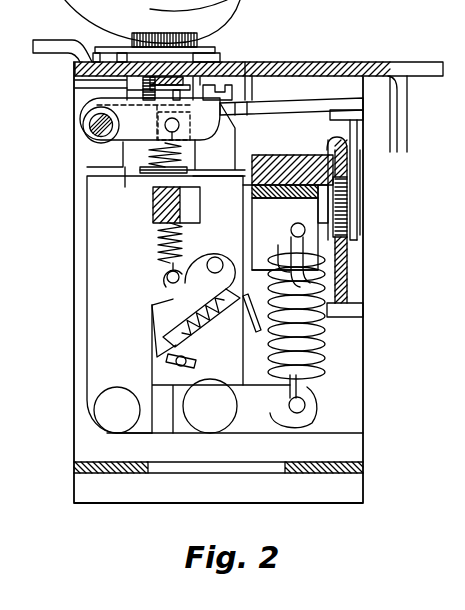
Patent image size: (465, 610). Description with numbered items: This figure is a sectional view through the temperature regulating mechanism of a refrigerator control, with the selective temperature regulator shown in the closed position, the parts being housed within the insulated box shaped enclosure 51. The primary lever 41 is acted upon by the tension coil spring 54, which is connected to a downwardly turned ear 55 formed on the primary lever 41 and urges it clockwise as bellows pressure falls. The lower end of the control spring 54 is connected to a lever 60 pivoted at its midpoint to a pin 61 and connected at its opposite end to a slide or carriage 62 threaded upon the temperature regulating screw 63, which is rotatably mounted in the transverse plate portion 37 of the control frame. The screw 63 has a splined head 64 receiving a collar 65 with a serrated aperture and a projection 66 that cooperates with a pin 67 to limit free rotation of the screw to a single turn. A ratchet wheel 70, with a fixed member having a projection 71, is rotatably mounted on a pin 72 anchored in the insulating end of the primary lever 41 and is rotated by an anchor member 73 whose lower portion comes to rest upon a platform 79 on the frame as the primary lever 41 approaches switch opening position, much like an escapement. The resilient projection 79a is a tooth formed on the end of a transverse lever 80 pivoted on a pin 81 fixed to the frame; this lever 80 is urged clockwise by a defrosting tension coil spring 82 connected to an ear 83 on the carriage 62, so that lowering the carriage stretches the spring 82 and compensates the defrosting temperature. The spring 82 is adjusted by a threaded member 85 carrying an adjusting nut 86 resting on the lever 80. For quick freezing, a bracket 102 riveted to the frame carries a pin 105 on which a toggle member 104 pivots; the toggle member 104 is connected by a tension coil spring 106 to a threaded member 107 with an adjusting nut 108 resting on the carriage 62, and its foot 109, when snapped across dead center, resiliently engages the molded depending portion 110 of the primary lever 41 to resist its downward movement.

The transverse plate portion 37 is at (337, 68).
The primary lever 41 is at (316, 157).
The insulated box shaped enclosure 51 is at (313, 490).
The tension coil spring 54 is at (327, 330).
The downwardly turned ear 55 is at (285, 242).
The lever 60 is at (270, 423).
The pin 61 is at (207, 423).
The slide or carriage 62 is at (93, 305).
The temperature regulating screw 63 is at (147, 157).
The splined head 64 is at (200, 33).
The collar 65 is at (215, 50).
The projection 66 is at (127, 58).
The pin 67 is at (142, 21).
The ratchet wheel 70 is at (343, 210).
The member with a projection 71 is at (358, 138).
The pin 72 is at (362, 192).
The anchor member 73 is at (343, 283).
The platform 79 is at (350, 312).
The resilient projection 79a is at (363, 115).
The transverse lever 80 is at (282, 108).
The pin 81 is at (90, 124).
The tension coil spring 82 is at (156, 245).
The ear 83 is at (160, 283).
The threaded member 85 is at (78, 80).
The adjusting nut 86 is at (158, 84).
The bracket 102 is at (160, 297).
The toggle member 104 is at (173, 331).
The pin 105 is at (205, 255).
The tension coil spring 106 is at (207, 333).
The threaded member 107 is at (232, 194).
The adjusting nut 108 is at (232, 92).
The foot 109 is at (242, 322).
The molded depending portion 110 is at (265, 257).